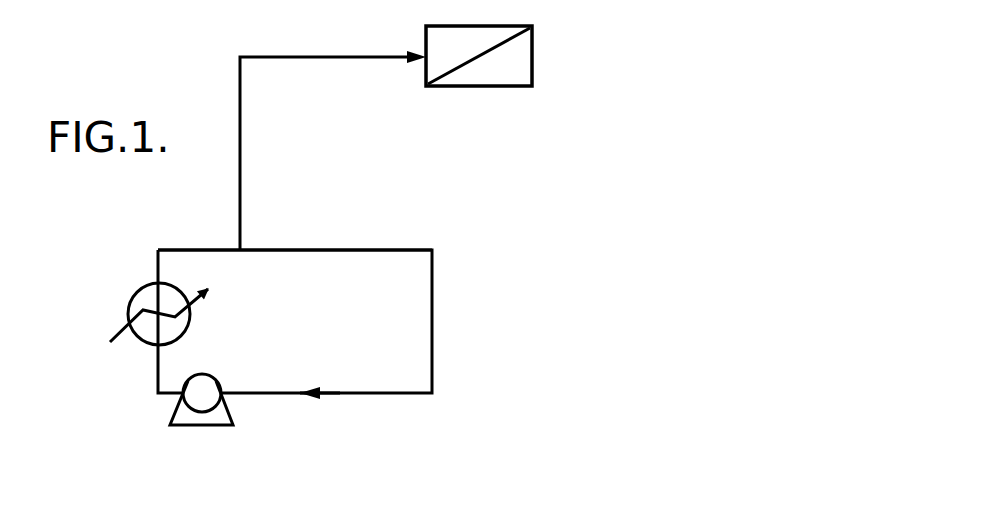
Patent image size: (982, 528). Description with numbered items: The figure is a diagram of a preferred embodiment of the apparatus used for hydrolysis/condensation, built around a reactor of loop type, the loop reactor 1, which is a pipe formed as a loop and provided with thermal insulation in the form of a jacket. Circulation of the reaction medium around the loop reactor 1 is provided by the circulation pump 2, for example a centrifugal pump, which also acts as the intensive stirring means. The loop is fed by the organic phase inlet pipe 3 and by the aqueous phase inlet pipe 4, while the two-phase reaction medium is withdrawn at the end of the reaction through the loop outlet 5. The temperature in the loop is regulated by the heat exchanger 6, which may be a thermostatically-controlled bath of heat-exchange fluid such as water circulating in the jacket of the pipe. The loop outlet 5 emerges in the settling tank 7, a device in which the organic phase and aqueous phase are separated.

The loop reactor 1 is at (357, 401).
The circulation pump 2 is at (171, 408).
The organic phase inlet pipe 3 is at (433, 338).
The aqueous phase inlet pipe 4 is at (369, 246).
The loop outlet 5 is at (236, 108).
The heat exchanger 6 is at (126, 316).
The settling tank 7 is at (538, 50).